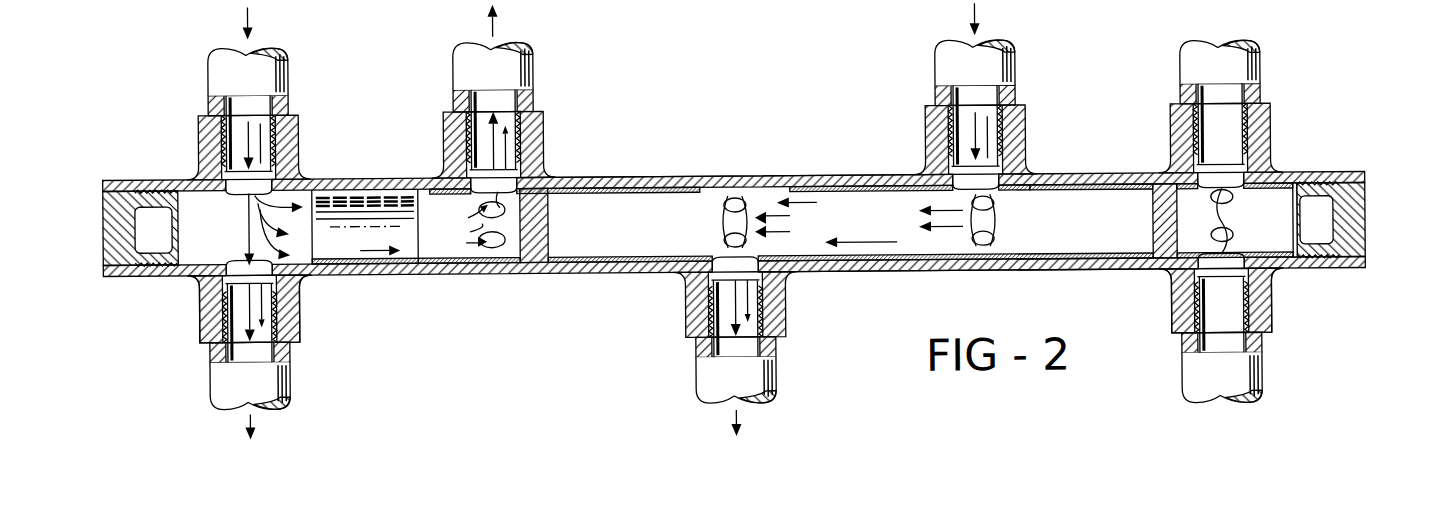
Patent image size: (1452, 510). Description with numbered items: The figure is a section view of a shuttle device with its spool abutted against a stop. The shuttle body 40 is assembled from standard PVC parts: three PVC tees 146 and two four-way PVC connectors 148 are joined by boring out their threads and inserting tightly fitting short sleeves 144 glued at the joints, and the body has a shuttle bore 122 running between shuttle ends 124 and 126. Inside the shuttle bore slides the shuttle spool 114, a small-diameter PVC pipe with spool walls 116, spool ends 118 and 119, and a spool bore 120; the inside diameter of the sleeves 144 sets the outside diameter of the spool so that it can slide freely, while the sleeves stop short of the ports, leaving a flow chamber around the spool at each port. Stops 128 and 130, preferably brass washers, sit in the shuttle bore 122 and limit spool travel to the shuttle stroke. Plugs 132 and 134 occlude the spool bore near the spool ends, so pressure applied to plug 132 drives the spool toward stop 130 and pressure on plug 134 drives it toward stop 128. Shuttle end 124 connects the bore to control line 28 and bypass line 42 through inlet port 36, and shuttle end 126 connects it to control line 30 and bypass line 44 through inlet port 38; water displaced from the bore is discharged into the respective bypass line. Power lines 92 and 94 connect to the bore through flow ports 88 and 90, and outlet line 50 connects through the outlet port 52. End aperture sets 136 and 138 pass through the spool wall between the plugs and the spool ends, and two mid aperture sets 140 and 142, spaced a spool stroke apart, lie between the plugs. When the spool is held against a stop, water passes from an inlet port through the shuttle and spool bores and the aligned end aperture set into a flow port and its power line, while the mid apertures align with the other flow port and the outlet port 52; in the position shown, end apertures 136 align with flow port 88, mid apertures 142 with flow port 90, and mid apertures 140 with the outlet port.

The control line 28 is at (222, 71).
The control line 30 is at (1194, 67).
The inlet port 36 is at (257, 178).
The inlet port 38 is at (1218, 180).
The shuttle body 40 is at (300, 123).
The bypass line 42 is at (223, 377).
The bypass line 44 is at (1195, 376).
The outlet line 50 is at (710, 375).
The outlet port 52 is at (786, 274).
The flow port 88 is at (517, 172).
The flow port 90 is at (1028, 141).
The power line 92 is at (468, 68).
The power line 94 is at (952, 68).
The shuttle spool 114 is at (408, 232).
The spool wall 116 is at (574, 256).
The spool end 118 is at (406, 221).
The spool end 119 is at (1298, 197).
The spool bore 120 is at (870, 237).
The shuttle bore 122 is at (198, 248).
The shuttle end 124 is at (122, 177).
The shuttle end 126 is at (1313, 177).
The stop 128 is at (152, 230).
The stop 130 is at (1300, 252).
The plug 132 is at (541, 230).
The plug 134 is at (1163, 234).
The end aperture set 136 is at (486, 238).
The end aperture set 138 is at (1227, 220).
The mid aperture set 140 is at (724, 215).
The mid aperture set 142 is at (1001, 219).
The sleeve 144 is at (322, 276).
The PVC tee 146 is at (566, 170).
The four-way PVC connector 148 is at (190, 283).